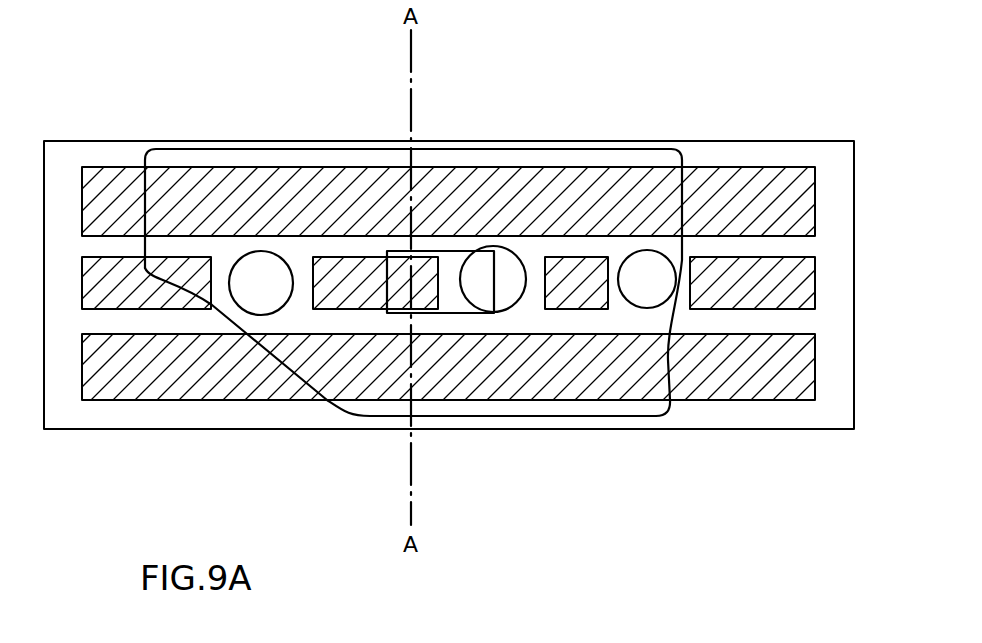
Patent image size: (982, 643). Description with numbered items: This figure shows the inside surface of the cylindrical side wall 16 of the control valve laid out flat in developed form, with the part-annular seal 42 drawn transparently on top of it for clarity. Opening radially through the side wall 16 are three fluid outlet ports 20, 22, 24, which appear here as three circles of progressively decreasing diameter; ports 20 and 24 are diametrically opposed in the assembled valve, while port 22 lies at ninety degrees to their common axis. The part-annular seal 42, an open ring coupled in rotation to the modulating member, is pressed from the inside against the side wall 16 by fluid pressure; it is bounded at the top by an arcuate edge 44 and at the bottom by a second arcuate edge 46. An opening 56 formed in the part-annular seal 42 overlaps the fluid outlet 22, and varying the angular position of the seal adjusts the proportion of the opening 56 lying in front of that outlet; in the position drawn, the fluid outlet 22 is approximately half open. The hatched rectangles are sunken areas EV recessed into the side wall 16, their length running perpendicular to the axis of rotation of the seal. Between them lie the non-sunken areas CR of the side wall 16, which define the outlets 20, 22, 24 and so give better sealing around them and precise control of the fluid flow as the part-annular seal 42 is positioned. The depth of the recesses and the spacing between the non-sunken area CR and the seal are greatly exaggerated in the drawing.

The cylindrical side wall 16 is at (832, 429).
The fluid outlet port 20 is at (252, 252).
The fluid outlet port 22 is at (522, 273).
The fluid outlet port 24 is at (654, 308).
The part-annular seal 42 is at (682, 152).
The arcuate edge 44 is at (190, 149).
The arcuate edge 46 is at (540, 417).
The opening 56 is at (463, 260).
The sunken areas EV is at (780, 190).
The non-sunken area CR is at (168, 411).